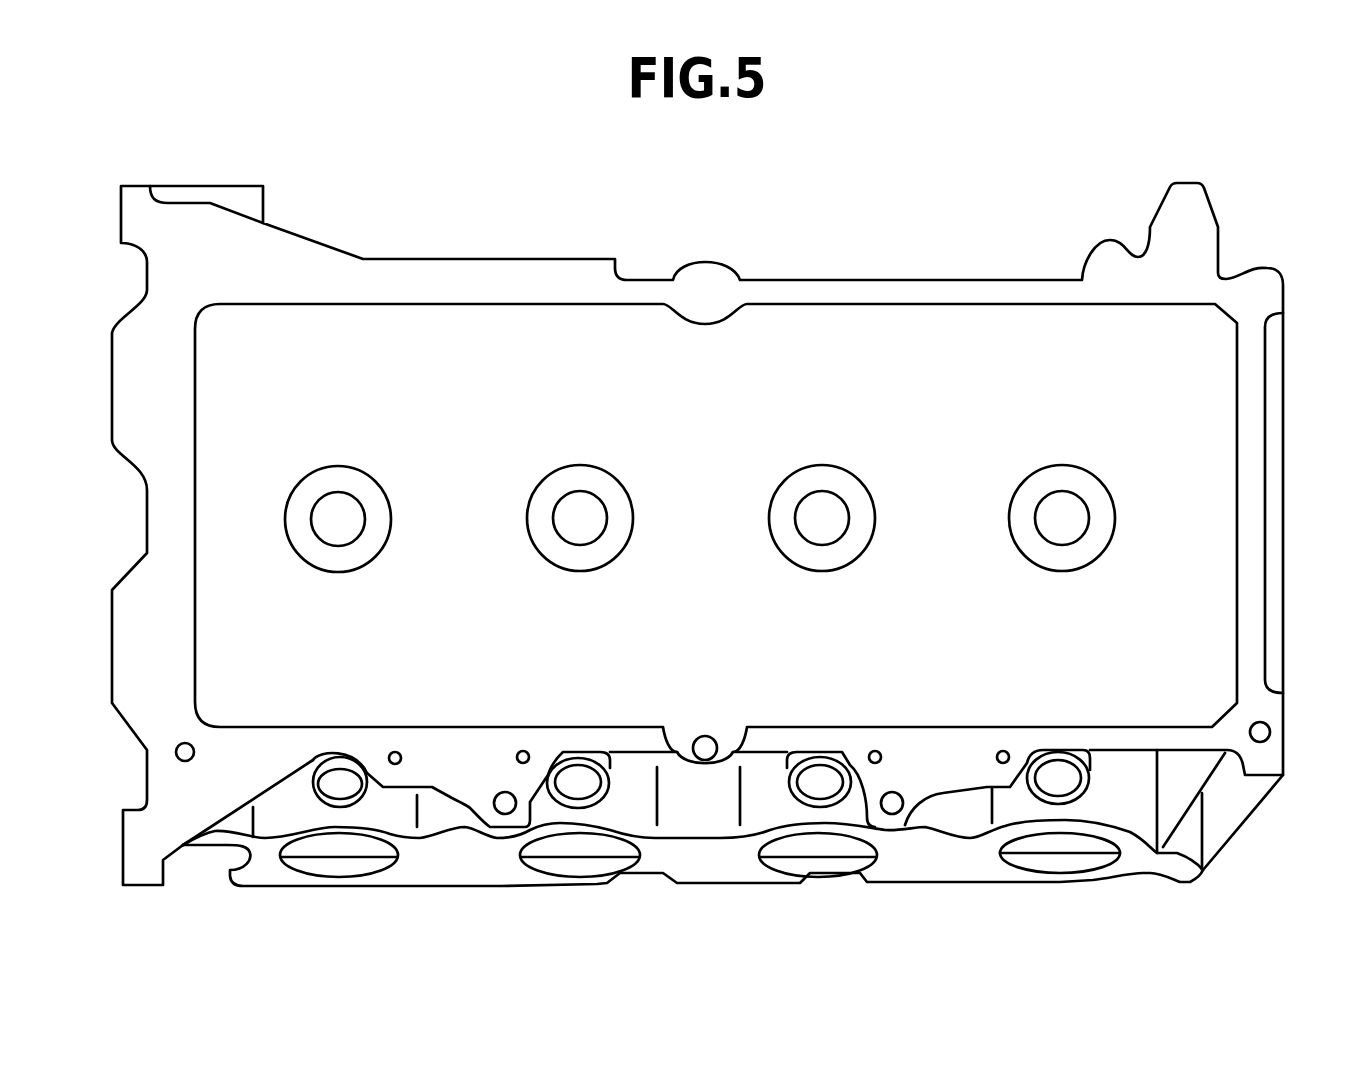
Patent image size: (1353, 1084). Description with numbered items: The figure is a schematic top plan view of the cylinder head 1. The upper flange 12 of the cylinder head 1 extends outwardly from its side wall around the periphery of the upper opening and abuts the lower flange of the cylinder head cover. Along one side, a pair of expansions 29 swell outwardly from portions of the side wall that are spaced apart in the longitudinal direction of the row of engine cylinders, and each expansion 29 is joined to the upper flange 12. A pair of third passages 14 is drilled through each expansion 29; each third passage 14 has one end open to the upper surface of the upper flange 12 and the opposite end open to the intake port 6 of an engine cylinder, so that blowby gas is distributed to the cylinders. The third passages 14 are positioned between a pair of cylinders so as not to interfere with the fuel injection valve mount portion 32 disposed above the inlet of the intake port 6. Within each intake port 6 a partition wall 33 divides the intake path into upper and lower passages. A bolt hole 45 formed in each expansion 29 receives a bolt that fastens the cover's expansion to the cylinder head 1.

The cylinder head 1 is at (1254, 261).
The intake port 6 is at (313, 865).
The upper flange 12 is at (1157, 732).
The third passage 14 is at (398, 754).
The expansion 29 is at (452, 787).
The fuel injection valve mount portion 32 is at (317, 755).
The partition wall 33 is at (363, 860).
The bolt hole 45 is at (505, 814).